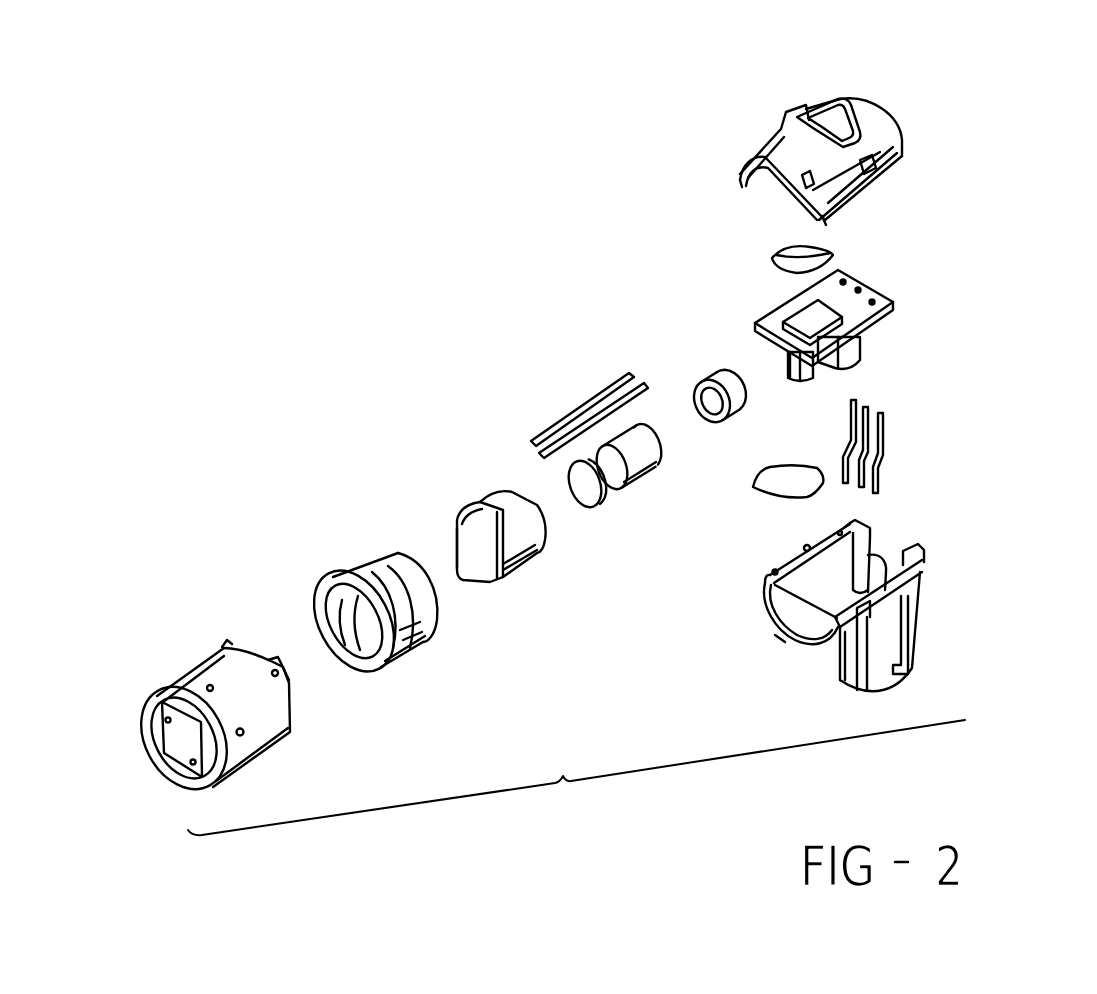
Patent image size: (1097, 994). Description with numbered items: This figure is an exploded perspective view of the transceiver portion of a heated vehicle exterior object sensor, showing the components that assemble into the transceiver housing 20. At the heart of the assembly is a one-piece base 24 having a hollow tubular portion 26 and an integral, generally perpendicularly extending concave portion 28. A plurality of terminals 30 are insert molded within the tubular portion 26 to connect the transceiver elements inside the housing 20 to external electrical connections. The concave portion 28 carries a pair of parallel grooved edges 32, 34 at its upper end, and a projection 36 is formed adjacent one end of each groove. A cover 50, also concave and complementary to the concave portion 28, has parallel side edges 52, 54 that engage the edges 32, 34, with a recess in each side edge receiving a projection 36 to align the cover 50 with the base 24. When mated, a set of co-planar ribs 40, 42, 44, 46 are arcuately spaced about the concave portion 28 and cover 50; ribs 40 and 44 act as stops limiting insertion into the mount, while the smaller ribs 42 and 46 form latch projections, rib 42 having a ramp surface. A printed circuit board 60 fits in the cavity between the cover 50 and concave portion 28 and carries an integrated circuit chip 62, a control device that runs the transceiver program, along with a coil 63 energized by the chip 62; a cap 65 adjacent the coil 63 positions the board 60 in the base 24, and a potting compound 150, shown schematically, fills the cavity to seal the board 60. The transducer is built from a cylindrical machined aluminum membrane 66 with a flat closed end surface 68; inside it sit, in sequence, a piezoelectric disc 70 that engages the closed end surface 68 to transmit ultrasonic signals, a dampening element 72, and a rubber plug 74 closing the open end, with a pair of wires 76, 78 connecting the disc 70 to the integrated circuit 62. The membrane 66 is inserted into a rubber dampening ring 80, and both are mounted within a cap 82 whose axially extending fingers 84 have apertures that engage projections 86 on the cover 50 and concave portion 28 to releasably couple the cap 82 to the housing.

The transceiver housing 20 is at (576, 777).
The base 24 is at (893, 648).
The tubular portion 26 is at (847, 667).
The concave portion 28 is at (780, 638).
The terminals 30 is at (855, 400).
The edge 32 is at (833, 535).
The edge 34 is at (908, 548).
The projection 36 is at (777, 577).
The rib 40 is at (893, 610).
The rib 42 is at (903, 157).
The rib 44 is at (835, 128).
The rib 46 is at (790, 118).
The cover 50 is at (878, 24).
The side edge 52 is at (741, 186).
The side edge 54 is at (820, 217).
The printed circuit board 60 is at (893, 303).
The integrated circuit chip 62 is at (810, 312).
The coil 63 is at (802, 377).
The cap 65 is at (863, 348).
The membrane 66 is at (482, 502).
The closed end surface 68 is at (468, 547).
The piezoelectric disc 70 is at (573, 480).
The dampening element 72 is at (647, 455).
The rubber plug 74 is at (707, 390).
The wire 76 is at (620, 395).
The wire 78 is at (560, 427).
The dampening ring 80 is at (360, 578).
The cap 82 is at (187, 672).
The finger 84 is at (287, 678).
The projection 86 is at (867, 193).
The potting compound 150 is at (797, 248).